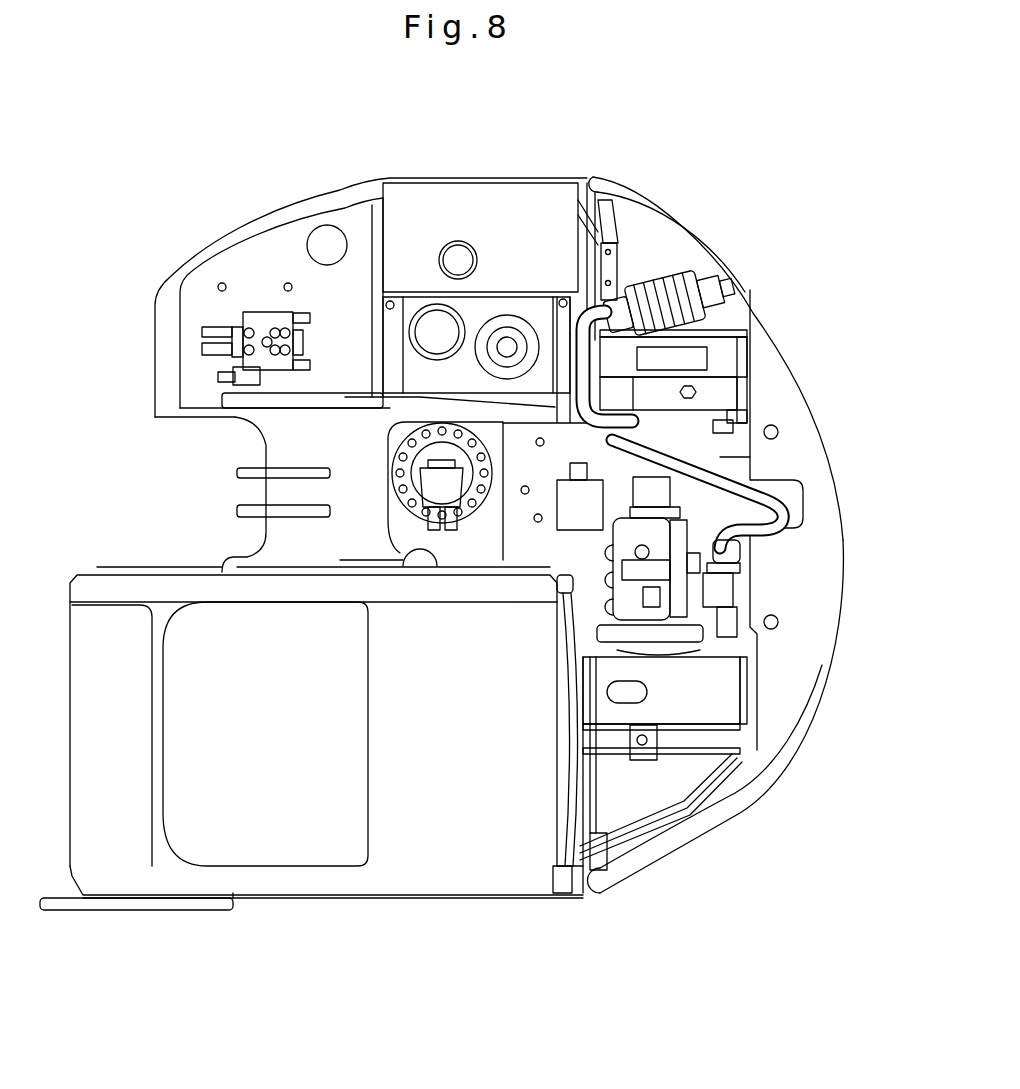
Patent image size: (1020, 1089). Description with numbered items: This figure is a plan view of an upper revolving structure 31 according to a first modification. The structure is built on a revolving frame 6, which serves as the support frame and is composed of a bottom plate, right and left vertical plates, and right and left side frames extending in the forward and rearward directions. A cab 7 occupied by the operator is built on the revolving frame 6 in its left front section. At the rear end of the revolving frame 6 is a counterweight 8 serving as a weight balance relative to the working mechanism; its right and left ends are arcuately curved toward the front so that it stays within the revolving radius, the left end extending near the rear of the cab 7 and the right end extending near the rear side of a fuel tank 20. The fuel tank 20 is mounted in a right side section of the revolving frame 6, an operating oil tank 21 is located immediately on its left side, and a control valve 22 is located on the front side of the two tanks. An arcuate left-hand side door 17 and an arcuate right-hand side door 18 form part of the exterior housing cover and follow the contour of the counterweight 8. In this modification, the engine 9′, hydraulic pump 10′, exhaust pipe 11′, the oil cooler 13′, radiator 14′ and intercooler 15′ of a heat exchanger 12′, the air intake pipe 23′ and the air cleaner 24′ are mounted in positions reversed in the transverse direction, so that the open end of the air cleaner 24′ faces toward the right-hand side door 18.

The revolving frame 6 is at (579, 168).
The cab 7 is at (352, 880).
The counterweight 8 is at (797, 665).
The engine 9′ is at (677, 582).
The hydraulic pump 10′ is at (643, 760).
The exhaust pipe 11′ is at (707, 708).
The heat exchanger 12′ is at (615, 393).
The oil cooler 13′ is at (713, 360).
The radiator 14′ is at (727, 393).
The intercooler 15′ is at (748, 360).
The left-hand side door 17 is at (720, 822).
The right-hand side door 18 is at (668, 226).
The fuel tank 20 is at (413, 190).
The operating oil tank 21 is at (490, 300).
The control valve 22 is at (258, 317).
The air intake pipe 23′ is at (730, 483).
The air cleaner 24′ is at (697, 270).
The upper revolving structure 31 is at (345, 170).